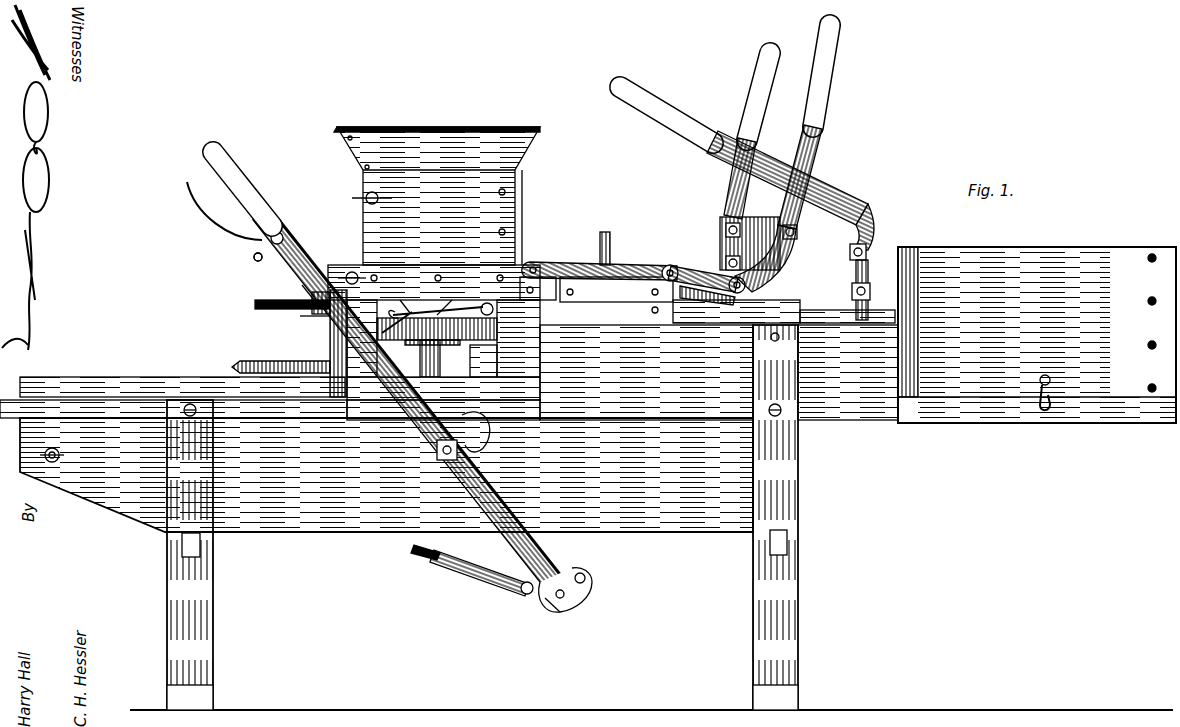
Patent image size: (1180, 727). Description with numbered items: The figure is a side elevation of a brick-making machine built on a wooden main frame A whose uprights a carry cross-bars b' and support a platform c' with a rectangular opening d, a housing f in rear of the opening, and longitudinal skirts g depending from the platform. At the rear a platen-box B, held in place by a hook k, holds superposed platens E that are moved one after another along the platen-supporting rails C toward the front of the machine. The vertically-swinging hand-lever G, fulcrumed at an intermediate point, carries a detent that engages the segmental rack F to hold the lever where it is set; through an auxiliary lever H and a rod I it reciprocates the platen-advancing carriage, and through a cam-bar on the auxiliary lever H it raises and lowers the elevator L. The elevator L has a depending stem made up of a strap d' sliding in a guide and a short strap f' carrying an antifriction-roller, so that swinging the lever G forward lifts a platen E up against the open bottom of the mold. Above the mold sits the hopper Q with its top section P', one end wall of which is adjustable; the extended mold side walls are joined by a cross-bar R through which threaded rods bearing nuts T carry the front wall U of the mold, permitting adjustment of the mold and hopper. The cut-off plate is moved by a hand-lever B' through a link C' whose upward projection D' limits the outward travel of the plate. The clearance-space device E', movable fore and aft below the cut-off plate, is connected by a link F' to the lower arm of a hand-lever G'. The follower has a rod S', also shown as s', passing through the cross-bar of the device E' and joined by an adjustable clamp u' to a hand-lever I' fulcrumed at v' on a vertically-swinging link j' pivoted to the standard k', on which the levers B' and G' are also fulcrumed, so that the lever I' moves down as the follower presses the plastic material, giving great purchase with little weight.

The main frame A is at (418, 475).
The uprights a is at (170, 598).
The platen-box B is at (1037, 335).
The platen-supporting rails C is at (173, 388).
The platens E is at (268, 357).
The clearance-space device E' is at (483, 359).
The segmental rack F is at (450, 299).
The hand-lever G is at (242, 189).
The rod I is at (389, 397).
The elevator L is at (404, 338).
The hopper Q is at (360, 226).
The top section of the hopper P' is at (437, 182).
The cross-bar R is at (322, 312).
The nuts T is at (298, 316).
The follower rod S' is at (291, 296).
The front wall of the mold U is at (262, 258).
The platform c' is at (400, 297).
The cross-bars b' is at (589, 295).
The strap d' is at (435, 358).
The opening d is at (411, 560).
The housing f is at (622, 360).
The short strap f' is at (444, 435).
The longitudinal skirts g is at (660, 530).
The auxiliary lever H is at (518, 560).
The link C' is at (600, 260).
The projection D' is at (624, 243).
The link F' is at (717, 261).
The standard k' is at (729, 285).
The vertically-swinging link j' is at (767, 243).
The hand-lever G' is at (801, 158).
The hand-lever B' is at (747, 136).
The hand-lever I' is at (747, 168).
The fulcrum v' is at (873, 240).
The follower rod s' is at (846, 290).
The adjustable clamp u' is at (784, 321).
The hook k is at (1033, 392).